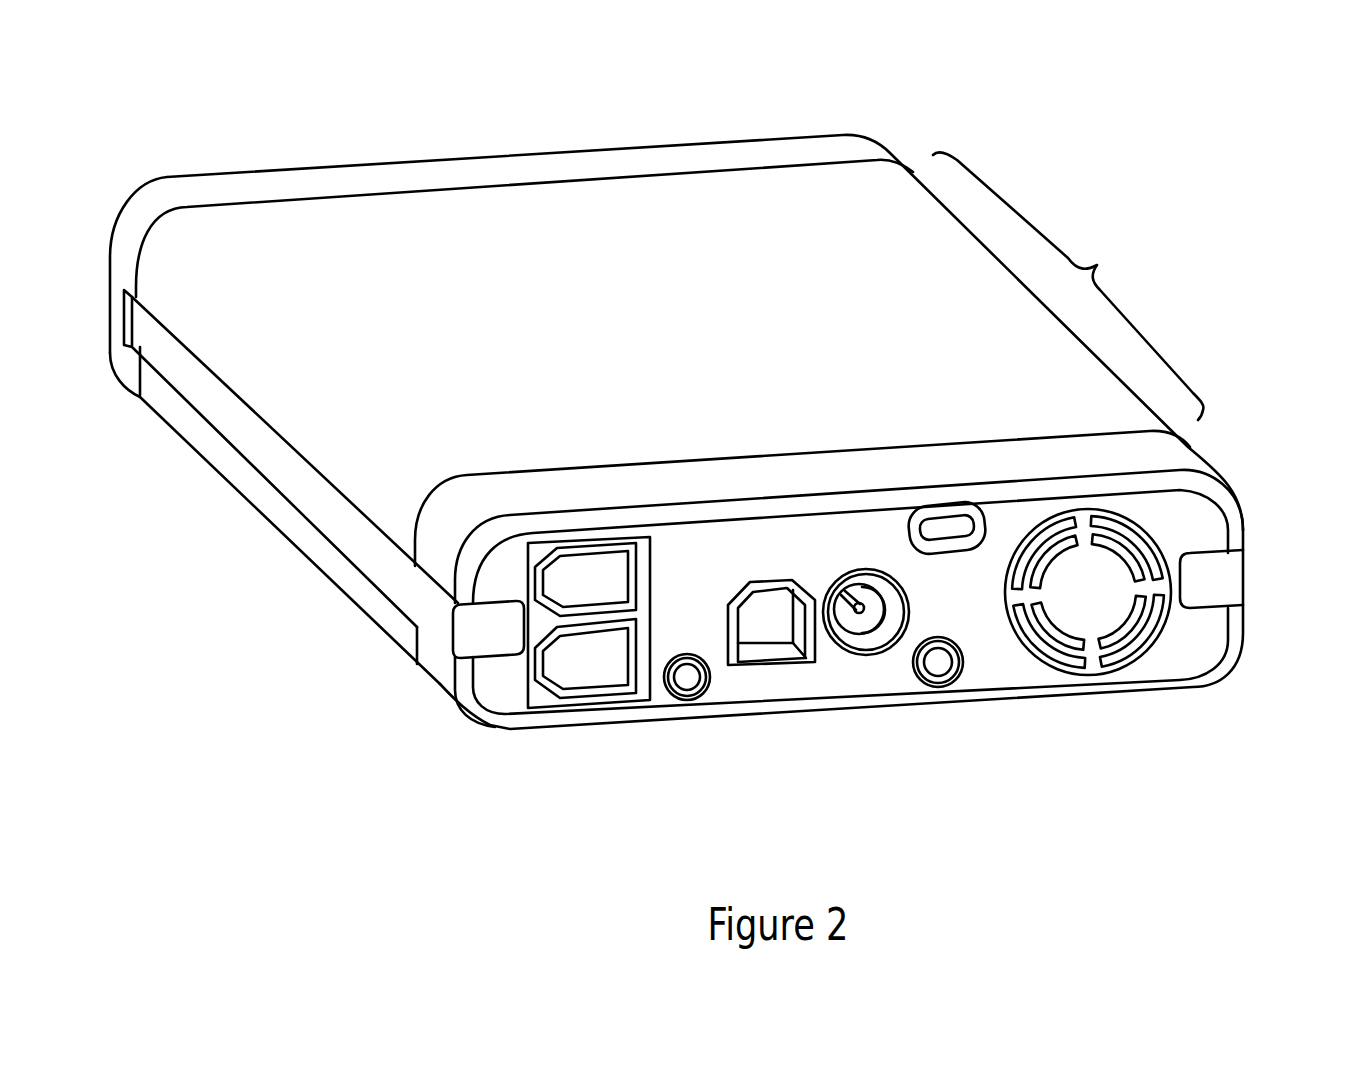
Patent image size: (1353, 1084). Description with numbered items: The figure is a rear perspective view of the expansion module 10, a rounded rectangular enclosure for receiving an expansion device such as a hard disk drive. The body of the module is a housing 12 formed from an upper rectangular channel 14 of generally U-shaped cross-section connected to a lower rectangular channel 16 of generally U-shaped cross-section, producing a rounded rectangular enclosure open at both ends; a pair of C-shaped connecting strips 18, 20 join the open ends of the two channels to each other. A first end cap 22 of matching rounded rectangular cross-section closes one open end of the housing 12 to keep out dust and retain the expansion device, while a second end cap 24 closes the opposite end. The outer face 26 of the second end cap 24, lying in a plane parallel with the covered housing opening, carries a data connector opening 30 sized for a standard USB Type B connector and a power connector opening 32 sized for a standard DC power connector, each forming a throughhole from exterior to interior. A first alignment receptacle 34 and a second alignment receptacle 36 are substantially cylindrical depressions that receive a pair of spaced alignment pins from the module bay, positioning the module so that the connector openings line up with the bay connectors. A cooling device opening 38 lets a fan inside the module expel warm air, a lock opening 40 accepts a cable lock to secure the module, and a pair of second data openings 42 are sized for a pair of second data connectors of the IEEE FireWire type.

The expansion module 10 is at (1180, 229).
The housing 12 is at (1068, 286).
The upper rectangular channel 14 is at (245, 363).
The lower rectangular channel 16 is at (298, 552).
The C-shaped connecting strip 18 is at (255, 457).
The C-shaped connecting strip 20 is at (1245, 565).
The first end cap 22 is at (137, 190).
The second end cap 24 is at (443, 690).
The outer face 26 is at (1183, 650).
The data connector opening 30 is at (778, 665).
The power connector opening 32 is at (867, 650).
The first alignment receptacle 34 is at (678, 690).
The second alignment receptacle 36 is at (938, 683).
The cooling device opening 38 is at (1060, 660).
The lock opening 40 is at (977, 545).
The second data openings 42 is at (530, 700).